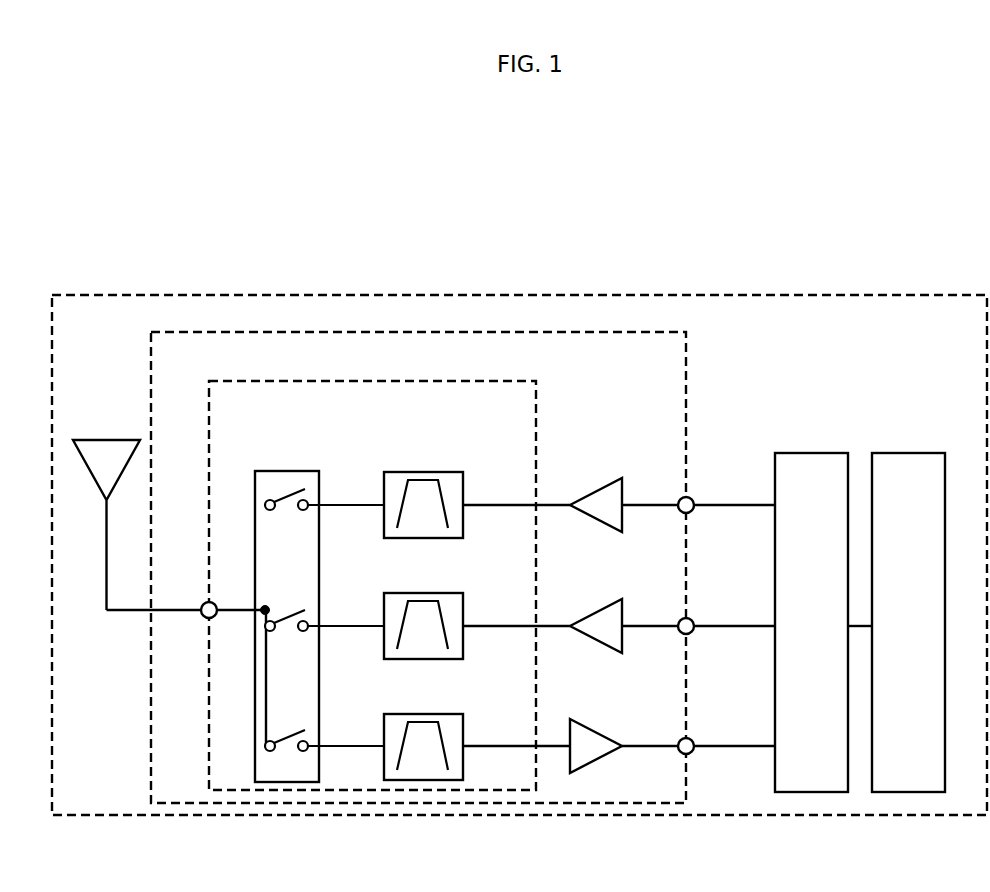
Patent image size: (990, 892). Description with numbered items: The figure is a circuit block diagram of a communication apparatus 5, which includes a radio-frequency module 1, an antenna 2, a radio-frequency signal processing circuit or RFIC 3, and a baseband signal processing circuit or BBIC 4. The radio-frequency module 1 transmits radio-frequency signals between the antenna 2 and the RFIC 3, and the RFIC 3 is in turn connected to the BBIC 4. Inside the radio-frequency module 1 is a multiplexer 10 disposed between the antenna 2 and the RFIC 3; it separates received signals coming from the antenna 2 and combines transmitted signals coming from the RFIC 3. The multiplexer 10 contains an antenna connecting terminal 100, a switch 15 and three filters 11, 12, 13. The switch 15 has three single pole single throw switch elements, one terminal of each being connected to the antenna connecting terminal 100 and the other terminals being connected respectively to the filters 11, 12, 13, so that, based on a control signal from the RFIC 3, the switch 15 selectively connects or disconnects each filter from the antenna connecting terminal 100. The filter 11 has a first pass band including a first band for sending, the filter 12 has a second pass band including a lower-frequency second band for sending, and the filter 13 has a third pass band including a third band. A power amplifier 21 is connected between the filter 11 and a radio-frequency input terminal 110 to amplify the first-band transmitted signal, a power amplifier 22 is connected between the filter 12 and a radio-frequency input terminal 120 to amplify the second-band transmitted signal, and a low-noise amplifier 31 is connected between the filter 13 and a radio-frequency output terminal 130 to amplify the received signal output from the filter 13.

The radio-frequency module 1 is at (687, 370).
The antenna 2 is at (107, 440).
The radio-frequency signal processing circuit (RFIC) 3 is at (812, 453).
The baseband signal processing circuit (BBIC) 4 is at (910, 453).
The communication apparatus 5 is at (953, 294).
The multiplexer 10 is at (537, 420).
The filter 11 is at (463, 482).
The filter 12 is at (463, 606).
The filter 13 is at (463, 728).
The switch 15 is at (281, 471).
The power amplifier 21 is at (600, 490).
The power amplifier 22 is at (600, 610).
The low-noise amplifier 31 is at (594, 764).
The antenna connecting terminal 100 is at (206, 617).
The radio-frequency input terminal 110 is at (690, 497).
The radio-frequency input terminal 120 is at (690, 619).
The radio-frequency output terminal 130 is at (690, 739).